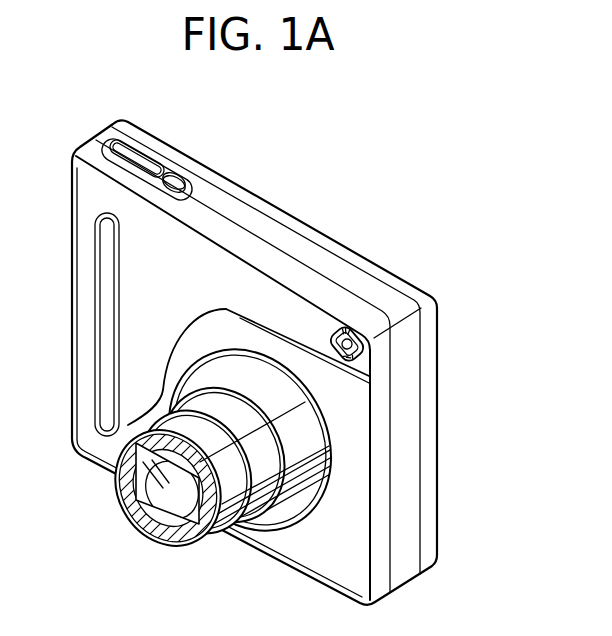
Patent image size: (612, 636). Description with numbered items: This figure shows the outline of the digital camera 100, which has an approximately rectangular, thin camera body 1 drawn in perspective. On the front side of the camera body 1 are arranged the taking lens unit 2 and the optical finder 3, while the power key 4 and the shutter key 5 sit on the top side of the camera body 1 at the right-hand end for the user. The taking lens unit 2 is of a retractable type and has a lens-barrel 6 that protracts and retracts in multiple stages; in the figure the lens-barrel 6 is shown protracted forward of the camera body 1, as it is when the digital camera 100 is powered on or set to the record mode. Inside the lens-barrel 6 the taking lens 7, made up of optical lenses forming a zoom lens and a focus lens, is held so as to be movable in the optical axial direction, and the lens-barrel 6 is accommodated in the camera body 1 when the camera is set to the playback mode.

The digital camera 100 is at (377, 231).
The camera body 1 is at (426, 461).
The taking lens unit 2 is at (142, 520).
The optical finder 3 is at (328, 332).
The power key 4 is at (178, 173).
The shutter key 5 is at (138, 152).
The lens-barrel 6 is at (137, 493).
The taking lens 7 is at (167, 538).